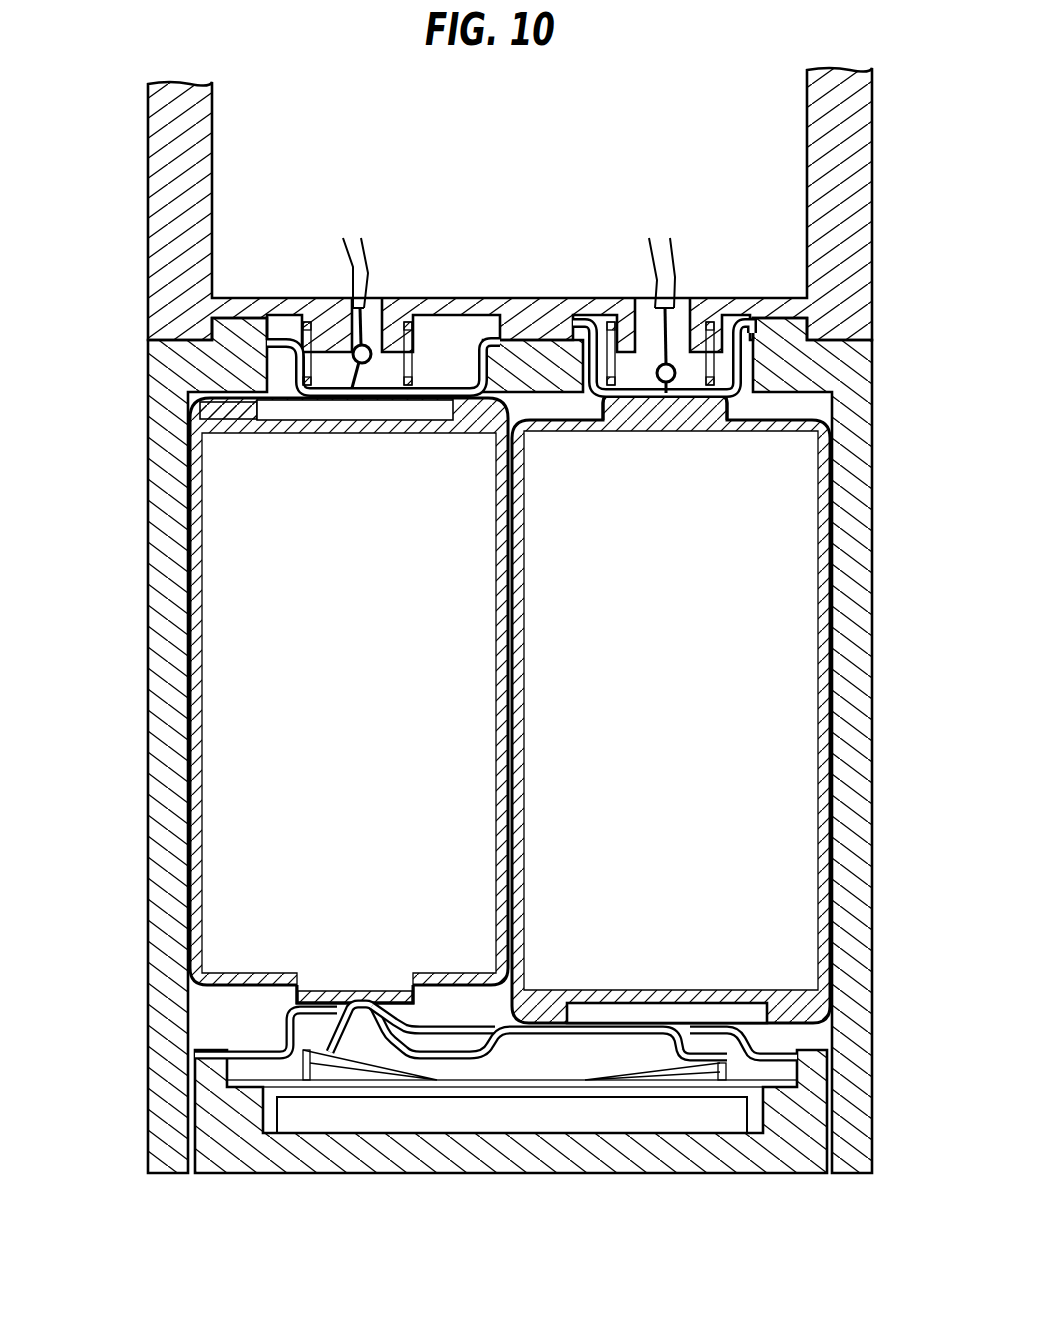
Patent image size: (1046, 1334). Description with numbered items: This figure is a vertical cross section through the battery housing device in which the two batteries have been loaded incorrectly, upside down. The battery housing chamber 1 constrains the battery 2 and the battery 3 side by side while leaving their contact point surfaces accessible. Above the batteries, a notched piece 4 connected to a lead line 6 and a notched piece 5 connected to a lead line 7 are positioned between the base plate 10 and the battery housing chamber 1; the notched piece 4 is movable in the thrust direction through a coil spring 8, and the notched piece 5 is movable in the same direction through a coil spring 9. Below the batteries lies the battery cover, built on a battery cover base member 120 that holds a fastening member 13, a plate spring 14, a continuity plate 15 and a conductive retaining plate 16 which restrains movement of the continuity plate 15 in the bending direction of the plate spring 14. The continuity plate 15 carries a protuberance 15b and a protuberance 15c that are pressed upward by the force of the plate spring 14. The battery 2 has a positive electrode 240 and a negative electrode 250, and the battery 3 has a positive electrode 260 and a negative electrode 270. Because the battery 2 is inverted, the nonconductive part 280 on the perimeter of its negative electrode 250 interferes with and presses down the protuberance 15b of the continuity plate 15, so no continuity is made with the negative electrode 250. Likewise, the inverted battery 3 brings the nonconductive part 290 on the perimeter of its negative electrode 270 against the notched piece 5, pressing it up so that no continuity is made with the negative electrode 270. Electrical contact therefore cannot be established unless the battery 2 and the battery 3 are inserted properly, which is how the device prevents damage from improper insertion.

The battery housing chamber 1 is at (873, 572).
The battery 2 is at (770, 708).
The battery 3 is at (243, 740).
The notched piece 4 is at (730, 352).
The notched piece 5 is at (270, 358).
The lead line 6 is at (673, 262).
The lead line 7 is at (356, 257).
The coil spring 8 is at (605, 352).
The coil spring 9 is at (418, 343).
The base plate 10 is at (873, 216).
The fastening member 13 is at (515, 1110).
The plate spring 14 is at (362, 1012).
The continuity plate 15 is at (452, 1060).
The protuberance 15b is at (672, 1032).
The protuberance 15c is at (303, 1052).
The conductive retaining plate 16 is at (290, 1030).
The battery cover base member 120 is at (797, 1150).
The positive electrode 240 is at (727, 410).
The negative electrode 250 is at (777, 1030).
The positive electrode 260 is at (297, 1000).
The negative electrode 270 is at (290, 410).
The nonconductive part 280 is at (548, 1010).
The nonconductive part 290 is at (470, 425).